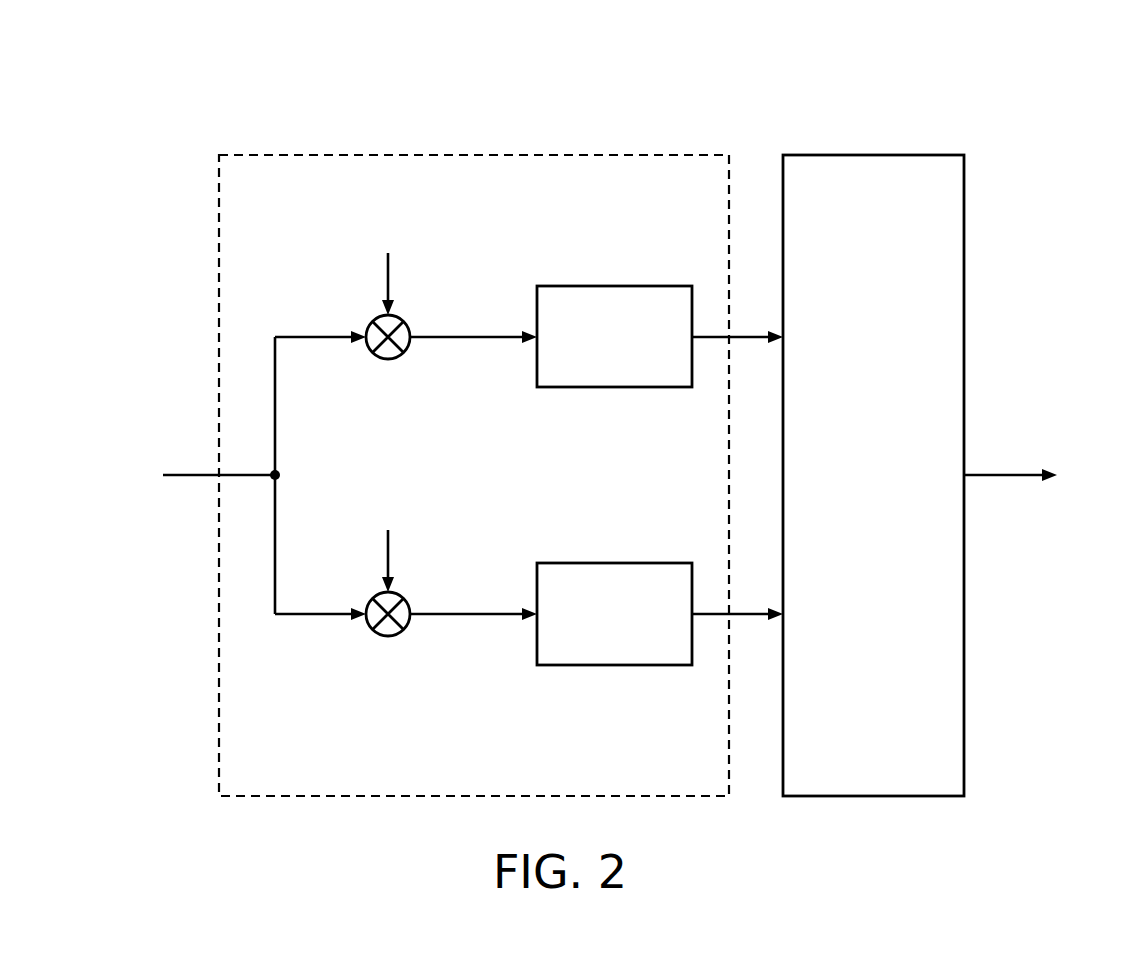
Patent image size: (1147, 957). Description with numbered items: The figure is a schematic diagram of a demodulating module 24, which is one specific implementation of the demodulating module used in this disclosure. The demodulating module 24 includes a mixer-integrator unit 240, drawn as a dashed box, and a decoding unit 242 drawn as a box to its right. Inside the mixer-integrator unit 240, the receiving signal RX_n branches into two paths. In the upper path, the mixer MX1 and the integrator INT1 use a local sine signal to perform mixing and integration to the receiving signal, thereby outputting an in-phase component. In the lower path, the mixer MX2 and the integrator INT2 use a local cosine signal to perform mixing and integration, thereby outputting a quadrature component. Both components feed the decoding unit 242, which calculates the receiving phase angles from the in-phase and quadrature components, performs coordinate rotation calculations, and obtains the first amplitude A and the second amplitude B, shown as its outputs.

The demodulating module 24 is at (1048, 68).
The mixer-integrator unit 240 is at (467, 155).
The decoding unit 242 is at (874, 155).
The mixer MX1 is at (388, 359).
The mixer MX2 is at (388, 636).
The integrator INT1 is at (613, 286).
The integrator INT2 is at (613, 563).